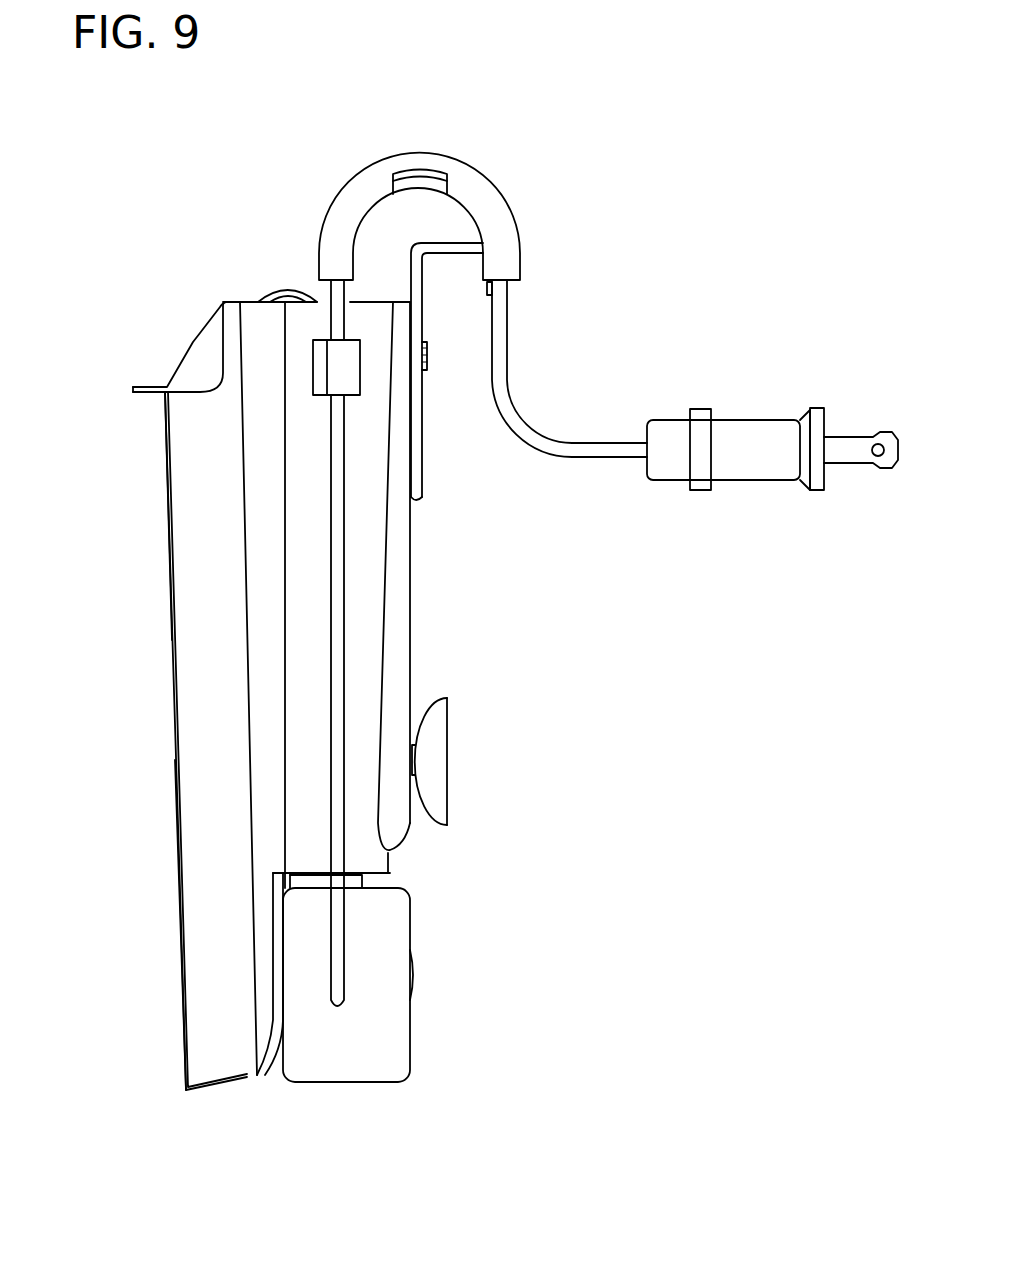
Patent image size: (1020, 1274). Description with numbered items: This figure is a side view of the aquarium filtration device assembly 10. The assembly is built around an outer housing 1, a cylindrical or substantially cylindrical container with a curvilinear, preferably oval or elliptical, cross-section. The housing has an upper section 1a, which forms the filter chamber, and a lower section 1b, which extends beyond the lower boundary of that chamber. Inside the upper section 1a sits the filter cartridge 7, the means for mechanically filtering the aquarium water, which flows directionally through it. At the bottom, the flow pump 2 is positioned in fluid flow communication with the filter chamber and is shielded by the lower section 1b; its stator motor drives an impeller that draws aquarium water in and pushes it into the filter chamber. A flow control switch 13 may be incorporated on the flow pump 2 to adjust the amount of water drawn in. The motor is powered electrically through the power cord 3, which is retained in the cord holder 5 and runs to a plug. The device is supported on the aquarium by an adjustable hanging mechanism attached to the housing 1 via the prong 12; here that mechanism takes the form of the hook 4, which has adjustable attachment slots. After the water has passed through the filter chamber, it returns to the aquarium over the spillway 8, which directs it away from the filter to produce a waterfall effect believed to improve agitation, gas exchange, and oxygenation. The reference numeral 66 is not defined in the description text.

The outer housing 1 is at (175, 688).
The upper section 1a is at (177, 467).
The lower section 1b is at (183, 1000).
The flow pump 2 is at (392, 1050).
The power cord 3 is at (607, 457).
The hook 4 is at (449, 246).
The cord holder 5 is at (497, 218).
The filter cartridge 7 is at (278, 292).
The spillway 8 is at (152, 382).
The filtration device assembly 10 is at (150, 778).
The prong 12 is at (427, 355).
The flow control switch 13 is at (415, 970).
The suction cup 66 is at (450, 775).